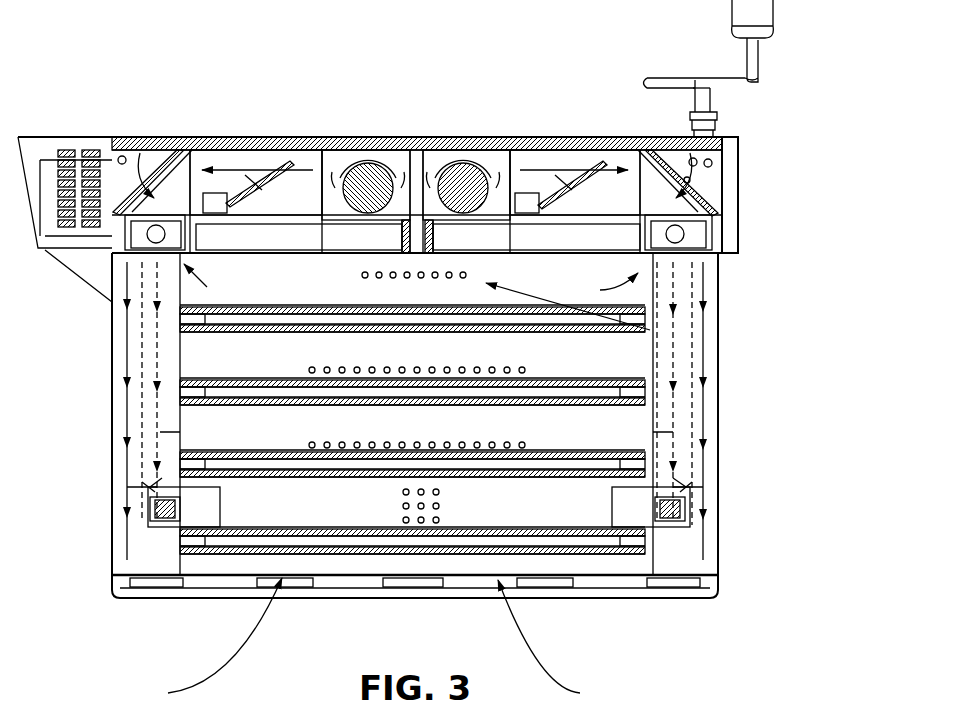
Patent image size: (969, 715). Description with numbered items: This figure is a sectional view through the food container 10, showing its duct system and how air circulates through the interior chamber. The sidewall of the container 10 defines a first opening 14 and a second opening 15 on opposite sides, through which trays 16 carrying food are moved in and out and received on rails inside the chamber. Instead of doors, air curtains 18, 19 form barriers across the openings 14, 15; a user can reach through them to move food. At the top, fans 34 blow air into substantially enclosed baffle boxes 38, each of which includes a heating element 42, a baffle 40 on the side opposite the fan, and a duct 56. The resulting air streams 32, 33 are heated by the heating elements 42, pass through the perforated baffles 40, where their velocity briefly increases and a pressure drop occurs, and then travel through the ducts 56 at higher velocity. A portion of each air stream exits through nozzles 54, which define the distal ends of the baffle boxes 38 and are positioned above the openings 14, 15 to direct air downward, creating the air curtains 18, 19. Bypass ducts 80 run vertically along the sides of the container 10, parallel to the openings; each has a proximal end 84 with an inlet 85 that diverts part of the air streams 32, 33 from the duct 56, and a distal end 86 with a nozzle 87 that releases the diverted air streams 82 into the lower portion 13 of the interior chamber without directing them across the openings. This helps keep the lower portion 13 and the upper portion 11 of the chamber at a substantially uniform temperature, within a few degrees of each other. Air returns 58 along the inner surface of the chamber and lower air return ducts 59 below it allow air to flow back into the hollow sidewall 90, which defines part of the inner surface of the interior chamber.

The container 10 is at (386, 64).
The upper portion of the interior chamber 11 is at (653, 333).
The lower portion of the interior chamber 13 is at (328, 508).
The first opening 14 is at (83, 457).
The second opening 15 is at (752, 417).
The trays 16 is at (237, 310).
The air curtain 18 is at (127, 423).
The air curtain 19 is at (702, 365).
The air stream 32 is at (253, 137).
The air stream 33 is at (560, 137).
The fan 34 is at (343, 137).
The baffle box 38 is at (273, 137).
The baffle 40 is at (205, 137).
The heating element 42 is at (265, 198).
The nozzle 54 is at (112, 263).
The duct 56 is at (153, 137).
The air return 58 is at (316, 369).
The lower air return duct 59 is at (373, 643).
The bypass duct 80 is at (168, 358).
The diverted air stream 82 is at (160, 432).
The proximal end 84 is at (417, 297).
The inlet 85 is at (125, 137).
The distal end 86 is at (142, 484).
The nozzle 87 is at (172, 522).
The sidewall 90 is at (586, 445).